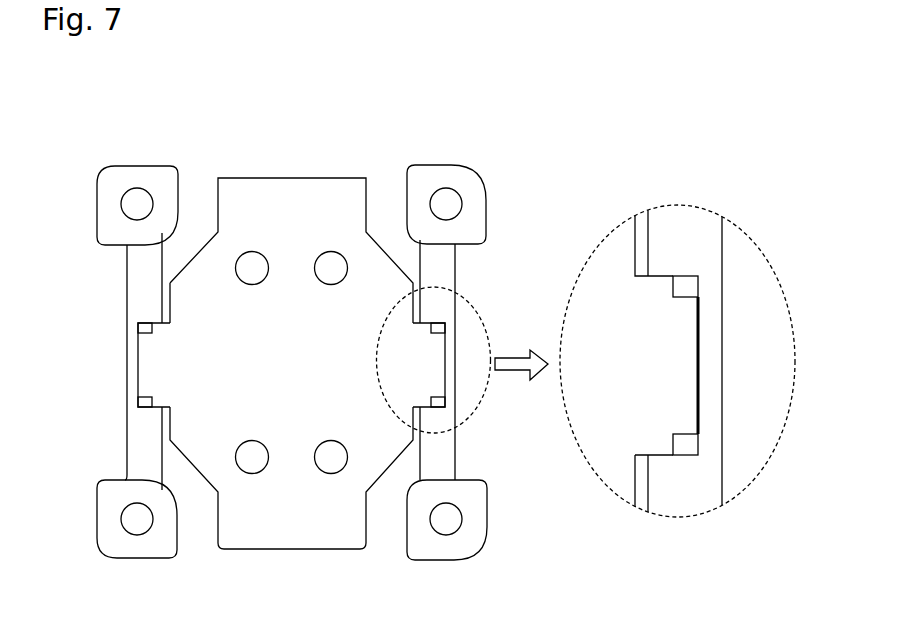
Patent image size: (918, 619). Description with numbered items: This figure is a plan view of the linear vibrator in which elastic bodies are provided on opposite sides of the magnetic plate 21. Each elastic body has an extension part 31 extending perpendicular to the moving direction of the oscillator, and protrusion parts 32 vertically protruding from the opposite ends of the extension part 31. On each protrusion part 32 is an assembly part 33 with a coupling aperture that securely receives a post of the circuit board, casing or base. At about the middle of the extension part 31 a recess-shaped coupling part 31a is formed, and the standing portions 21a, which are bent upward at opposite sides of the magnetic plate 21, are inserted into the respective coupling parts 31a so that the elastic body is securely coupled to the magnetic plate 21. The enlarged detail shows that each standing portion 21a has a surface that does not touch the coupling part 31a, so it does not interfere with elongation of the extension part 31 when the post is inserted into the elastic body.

The magnetic plate 21 is at (293, 217).
The standing portion 21a is at (699, 387).
The extension part 31 is at (127, 372).
The coupling part 31a is at (693, 288).
The protrusion part 32 is at (137, 176).
The assembly part 33 is at (121, 205).